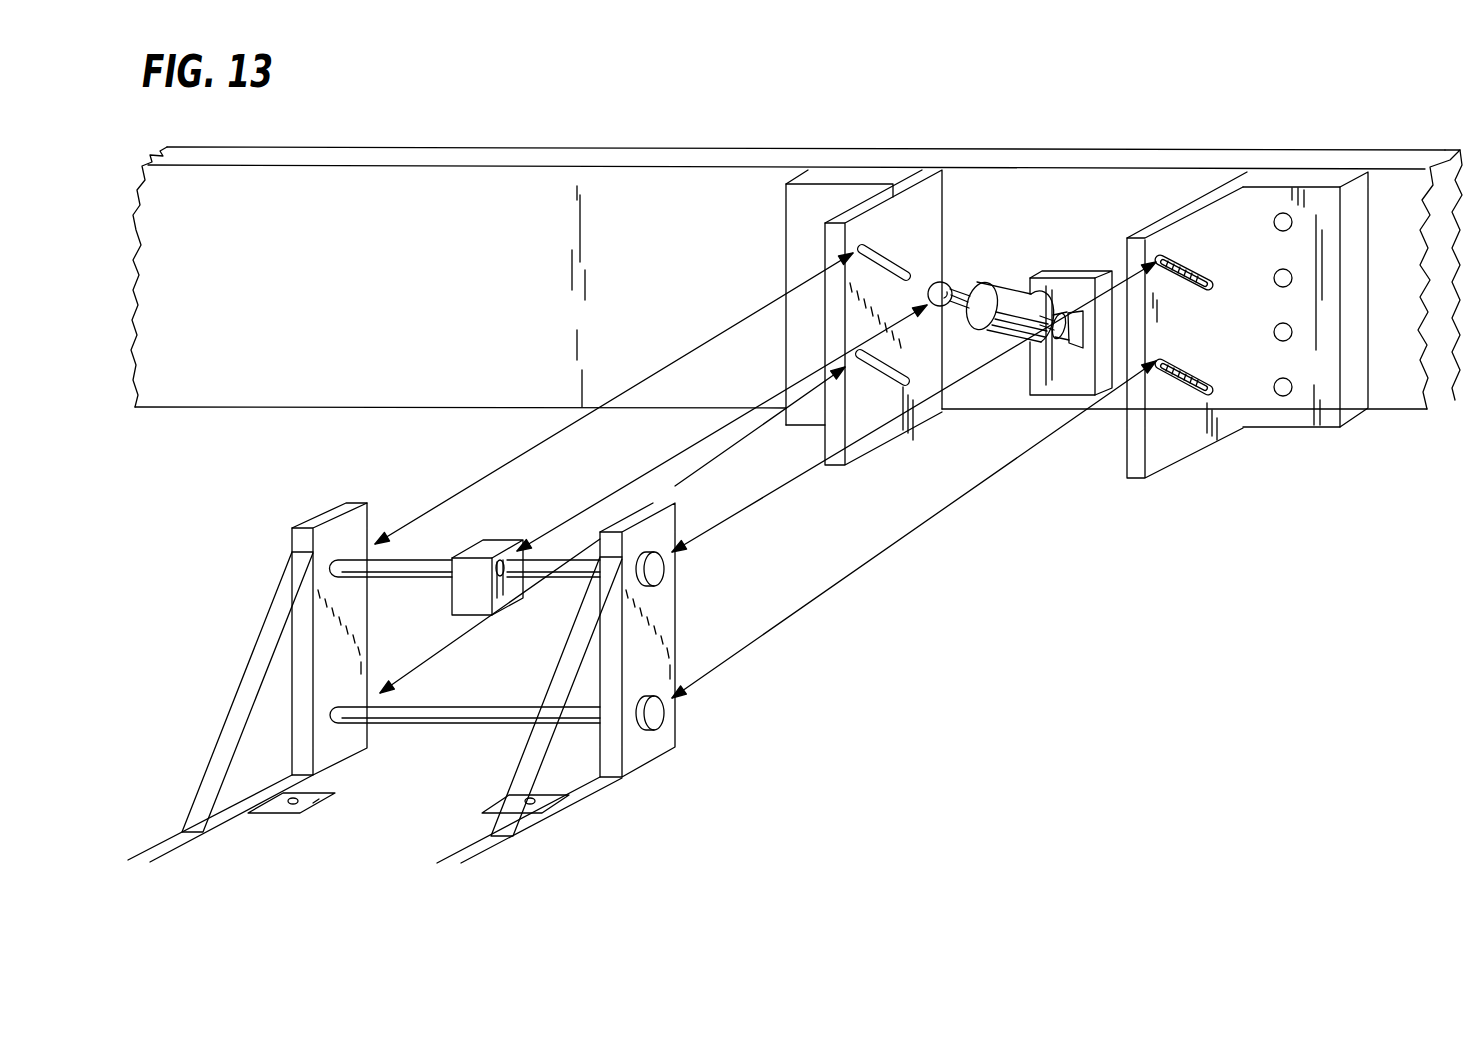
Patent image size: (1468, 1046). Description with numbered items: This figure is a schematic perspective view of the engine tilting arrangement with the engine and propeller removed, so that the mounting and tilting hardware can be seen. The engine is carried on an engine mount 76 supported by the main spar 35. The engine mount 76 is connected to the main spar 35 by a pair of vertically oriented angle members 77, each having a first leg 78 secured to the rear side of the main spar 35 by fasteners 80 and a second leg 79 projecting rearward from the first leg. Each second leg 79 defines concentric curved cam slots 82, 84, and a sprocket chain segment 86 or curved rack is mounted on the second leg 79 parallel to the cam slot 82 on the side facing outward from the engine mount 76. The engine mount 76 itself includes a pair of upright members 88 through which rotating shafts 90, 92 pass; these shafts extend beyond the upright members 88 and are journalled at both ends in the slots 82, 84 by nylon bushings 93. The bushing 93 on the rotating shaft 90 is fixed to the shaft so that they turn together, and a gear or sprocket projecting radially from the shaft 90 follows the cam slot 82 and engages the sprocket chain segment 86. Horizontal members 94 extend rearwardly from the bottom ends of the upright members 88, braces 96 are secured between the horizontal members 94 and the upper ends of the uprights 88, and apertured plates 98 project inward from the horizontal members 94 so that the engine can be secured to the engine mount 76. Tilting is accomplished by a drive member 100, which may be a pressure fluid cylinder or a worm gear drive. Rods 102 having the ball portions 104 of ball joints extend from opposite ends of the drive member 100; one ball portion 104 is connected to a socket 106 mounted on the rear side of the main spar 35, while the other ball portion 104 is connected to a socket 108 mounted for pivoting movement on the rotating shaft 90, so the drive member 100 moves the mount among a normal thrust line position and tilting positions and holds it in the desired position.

The main spar 35 is at (420, 197).
The drive member 100 is at (1005, 276).
The angle members 77 is at (783, 205).
The first leg 78 is at (807, 242).
The second leg 79 is at (862, 452).
The curved cam slot 82 is at (882, 250).
The curved cam slot 84 is at (863, 360).
The sprocket chain segment 86 is at (1190, 398).
The fasteners 80 is at (1292, 387).
The ball portions 104 is at (944, 283).
The rods 102 is at (952, 308).
The socket 106 is at (1053, 275).
The engine mount 76 is at (302, 517).
The upright members 88 is at (357, 503).
The braces 96 is at (250, 680).
The horizontal members 94 is at (230, 814).
The apertured plates 98 is at (308, 803).
The rotating shaft 92 is at (440, 709).
The rotating shaft 90 is at (428, 556).
The socket 108 is at (467, 587).
The nylon bushings 93 is at (665, 565).